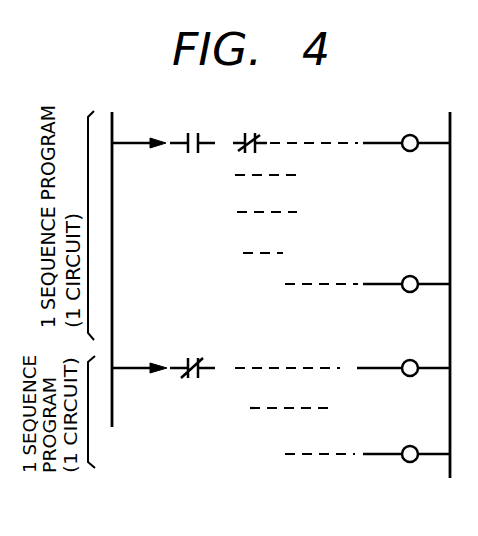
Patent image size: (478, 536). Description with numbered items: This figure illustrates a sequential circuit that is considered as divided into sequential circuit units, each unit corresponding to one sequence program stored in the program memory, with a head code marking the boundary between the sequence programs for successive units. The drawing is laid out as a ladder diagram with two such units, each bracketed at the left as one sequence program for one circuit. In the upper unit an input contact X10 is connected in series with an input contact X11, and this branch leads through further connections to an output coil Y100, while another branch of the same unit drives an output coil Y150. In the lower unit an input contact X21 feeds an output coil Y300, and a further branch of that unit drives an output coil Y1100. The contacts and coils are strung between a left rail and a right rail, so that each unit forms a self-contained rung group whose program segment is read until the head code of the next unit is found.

The normally open input contact X10 is at (193, 128).
The normally closed input contact X11 is at (252, 128).
The output coil Y100 is at (406, 127).
The output coil Y150 is at (406, 270).
The normally closed input contact X21 is at (192, 355).
The output coil Y300 is at (403, 356).
The output coil Y1100 is at (406, 438).